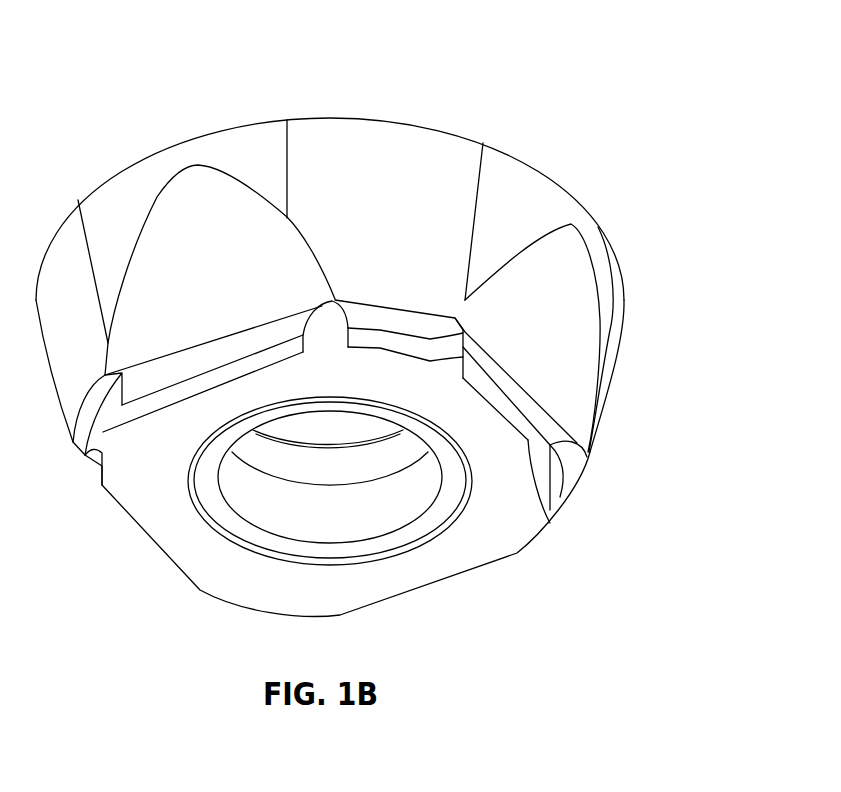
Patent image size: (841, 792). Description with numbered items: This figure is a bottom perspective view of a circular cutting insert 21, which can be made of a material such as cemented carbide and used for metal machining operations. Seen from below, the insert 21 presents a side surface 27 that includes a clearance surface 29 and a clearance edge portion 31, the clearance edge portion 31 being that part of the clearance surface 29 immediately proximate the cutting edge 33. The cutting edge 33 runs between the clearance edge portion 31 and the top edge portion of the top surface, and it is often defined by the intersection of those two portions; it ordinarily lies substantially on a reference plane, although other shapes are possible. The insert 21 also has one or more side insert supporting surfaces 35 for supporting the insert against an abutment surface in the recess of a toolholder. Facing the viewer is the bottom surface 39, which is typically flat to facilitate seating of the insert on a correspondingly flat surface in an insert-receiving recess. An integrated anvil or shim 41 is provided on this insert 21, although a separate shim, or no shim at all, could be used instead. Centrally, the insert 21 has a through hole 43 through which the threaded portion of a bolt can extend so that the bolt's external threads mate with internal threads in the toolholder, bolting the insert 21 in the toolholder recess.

The cutting insert 21 is at (605, 158).
The side surface 27 is at (678, 310).
The clearance surface 29 is at (605, 257).
The clearance edge portion 31 is at (583, 215).
The cutting edge 33 is at (547, 177).
The side insert supporting surface 35 is at (547, 327).
The bottom surface 39 is at (490, 497).
The integrated anvil or shim 41 is at (550, 447).
The through hole 43 is at (340, 480).